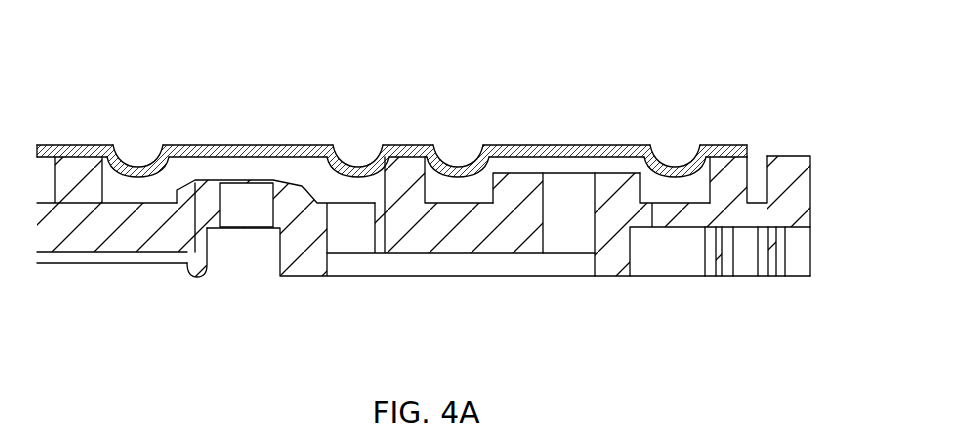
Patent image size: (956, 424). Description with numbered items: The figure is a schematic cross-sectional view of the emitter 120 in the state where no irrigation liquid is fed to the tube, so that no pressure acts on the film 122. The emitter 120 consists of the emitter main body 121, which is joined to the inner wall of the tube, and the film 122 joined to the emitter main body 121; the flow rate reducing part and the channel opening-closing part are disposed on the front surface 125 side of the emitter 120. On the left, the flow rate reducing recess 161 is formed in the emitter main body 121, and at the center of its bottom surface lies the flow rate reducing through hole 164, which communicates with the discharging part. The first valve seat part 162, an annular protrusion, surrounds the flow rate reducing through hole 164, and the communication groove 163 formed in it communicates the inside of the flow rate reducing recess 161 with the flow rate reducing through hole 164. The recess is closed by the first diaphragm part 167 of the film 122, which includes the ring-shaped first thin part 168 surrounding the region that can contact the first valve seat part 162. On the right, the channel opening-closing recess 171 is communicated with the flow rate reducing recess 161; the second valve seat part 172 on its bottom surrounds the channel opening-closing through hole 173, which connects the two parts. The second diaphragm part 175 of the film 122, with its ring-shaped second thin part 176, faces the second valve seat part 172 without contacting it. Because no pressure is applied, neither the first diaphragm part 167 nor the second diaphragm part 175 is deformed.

The emitter 120 is at (778, 66).
The emitter main body 121 is at (68, 146).
The film 122 is at (97, 146).
The front surface 125 is at (795, 151).
The flow rate reducing recess 161 is at (383, 186).
The first valve seat part 162 is at (292, 186).
The communication groove 163 is at (196, 227).
The flow rate reducing through hole 164 is at (241, 218).
The first diaphragm part 167 is at (387, 141).
The first thin part 168 is at (123, 181).
The channel opening-closing recess 171 is at (700, 185).
The second valve seat part 172 is at (614, 183).
The channel opening-closing through hole 173 is at (569, 229).
The second diaphragm part 175 is at (715, 141).
The second thin part 176 is at (459, 176).